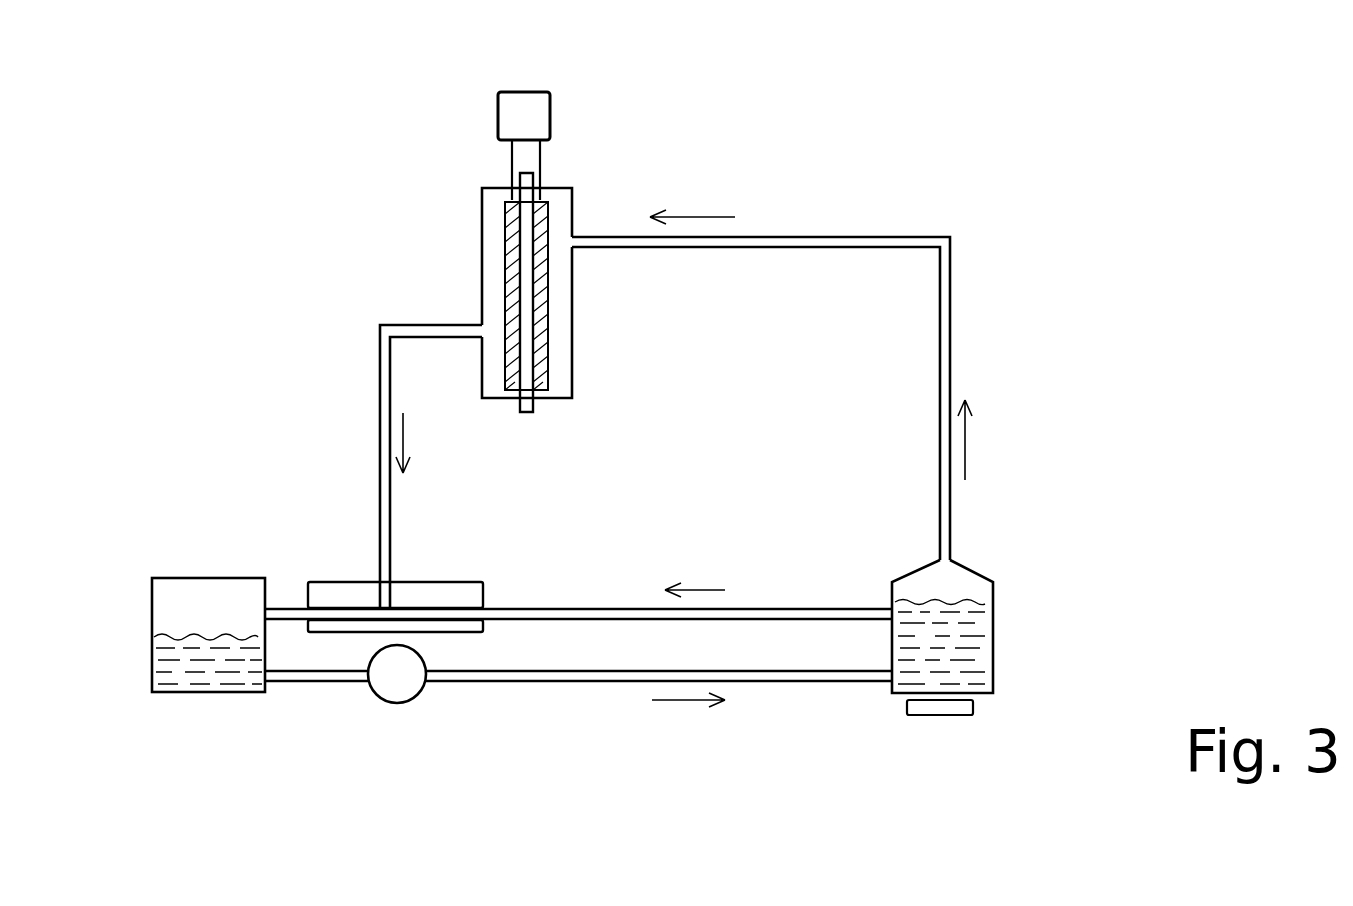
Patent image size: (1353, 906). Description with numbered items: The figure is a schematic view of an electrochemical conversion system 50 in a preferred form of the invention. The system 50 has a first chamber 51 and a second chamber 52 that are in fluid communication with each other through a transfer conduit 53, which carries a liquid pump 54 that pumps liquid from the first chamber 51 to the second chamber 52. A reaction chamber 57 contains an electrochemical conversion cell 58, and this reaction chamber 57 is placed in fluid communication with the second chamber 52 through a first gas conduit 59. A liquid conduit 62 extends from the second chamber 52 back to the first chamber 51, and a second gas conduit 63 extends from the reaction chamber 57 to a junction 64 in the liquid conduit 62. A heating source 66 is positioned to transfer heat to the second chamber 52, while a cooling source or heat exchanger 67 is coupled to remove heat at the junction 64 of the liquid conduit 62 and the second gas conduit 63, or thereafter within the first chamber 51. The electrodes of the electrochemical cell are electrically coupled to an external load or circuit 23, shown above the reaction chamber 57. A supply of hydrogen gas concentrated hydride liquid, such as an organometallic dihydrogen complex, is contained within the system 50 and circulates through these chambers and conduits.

The external load or circuit 23 is at (528, 92).
The electrochemical conversion system 50 is at (980, 116).
The first chamber 51 is at (185, 578).
The second chamber 52 is at (995, 637).
The transfer conduit 53 is at (582, 680).
The liquid pump 54 is at (396, 703).
The reaction chamber 57 is at (573, 208).
The electrochemical conversion cell 58 is at (555, 295).
The first gas conduit 59 is at (952, 325).
The liquid conduit 62 is at (797, 609).
The second gas conduit 63 is at (380, 377).
The junction 64 is at (400, 598).
The heating source 66 is at (953, 717).
The cooling source or heat exchanger 67 is at (472, 582).